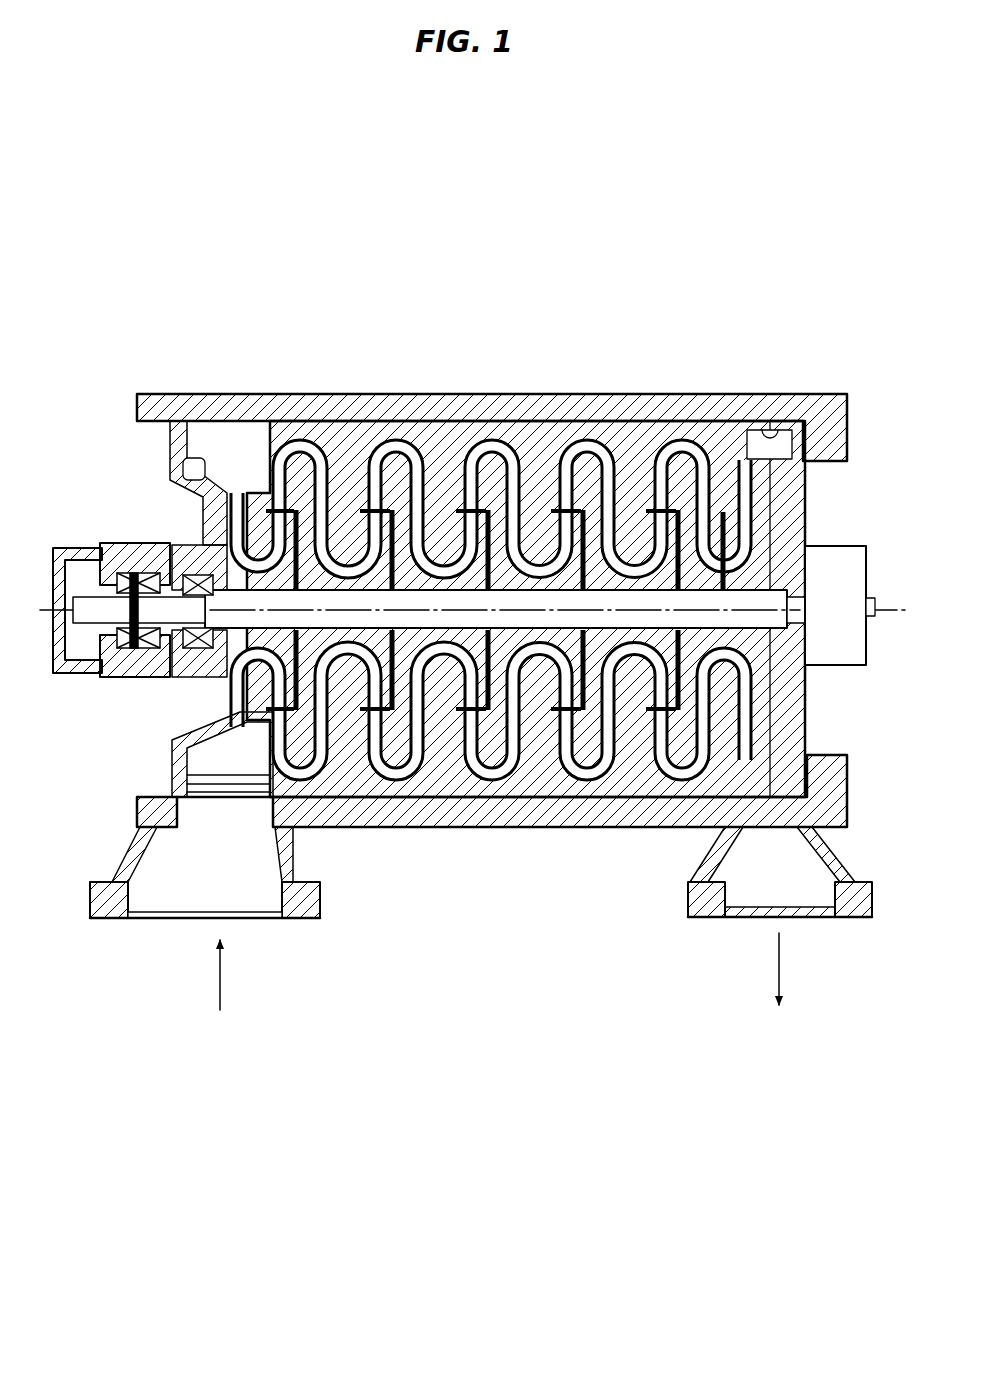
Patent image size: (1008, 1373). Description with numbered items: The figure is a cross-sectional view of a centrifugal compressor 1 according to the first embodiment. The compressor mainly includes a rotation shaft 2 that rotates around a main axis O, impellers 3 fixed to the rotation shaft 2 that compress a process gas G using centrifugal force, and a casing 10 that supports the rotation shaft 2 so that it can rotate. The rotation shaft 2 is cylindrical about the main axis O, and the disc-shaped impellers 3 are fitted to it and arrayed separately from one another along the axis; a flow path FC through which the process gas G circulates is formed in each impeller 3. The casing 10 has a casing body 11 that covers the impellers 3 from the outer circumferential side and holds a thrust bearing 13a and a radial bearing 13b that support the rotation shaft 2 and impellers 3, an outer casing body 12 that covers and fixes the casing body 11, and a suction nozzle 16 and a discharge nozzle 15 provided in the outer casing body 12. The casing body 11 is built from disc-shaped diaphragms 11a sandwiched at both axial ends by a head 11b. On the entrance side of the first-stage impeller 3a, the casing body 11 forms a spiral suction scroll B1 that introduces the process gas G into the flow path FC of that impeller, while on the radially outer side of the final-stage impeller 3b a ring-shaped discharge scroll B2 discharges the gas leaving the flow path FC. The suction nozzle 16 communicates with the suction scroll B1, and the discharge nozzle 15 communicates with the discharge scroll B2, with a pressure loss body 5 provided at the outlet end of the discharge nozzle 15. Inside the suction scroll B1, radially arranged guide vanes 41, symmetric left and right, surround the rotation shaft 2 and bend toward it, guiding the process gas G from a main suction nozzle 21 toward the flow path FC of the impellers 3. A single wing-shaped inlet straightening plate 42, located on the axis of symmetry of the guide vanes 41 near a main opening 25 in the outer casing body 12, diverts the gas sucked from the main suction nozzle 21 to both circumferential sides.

The centrifugal compressor 1 is at (766, 194).
The rotation shaft 2 is at (500, 630).
The impellers 3 is at (483, 394).
The first-stage impeller 3a is at (340, 640).
The final-stage impeller 3b is at (727, 520).
The pressure loss body 5 is at (818, 900).
The casing 10 is at (468, 995).
The casing body 11 is at (451, 897).
The diaphragms 11a is at (665, 830).
The head 11b is at (172, 771).
The outer casing body 12 is at (590, 812).
The thrust bearing 13a is at (105, 675).
The radial bearing 13b is at (132, 676).
The discharge nozzle 15 is at (770, 971).
The suction nozzle 16 is at (317, 976).
The main suction nozzle 21 is at (107, 910).
The main opening 25 is at (170, 808).
The guide vanes 41 is at (205, 522).
The inlet straightening plate 42 is at (218, 790).
The suction scroll B1 is at (178, 458).
The discharge scroll B2 is at (776, 430).
The flow path FC is at (313, 394).
The process gas G is at (220, 978).
The main axis O is at (888, 605).